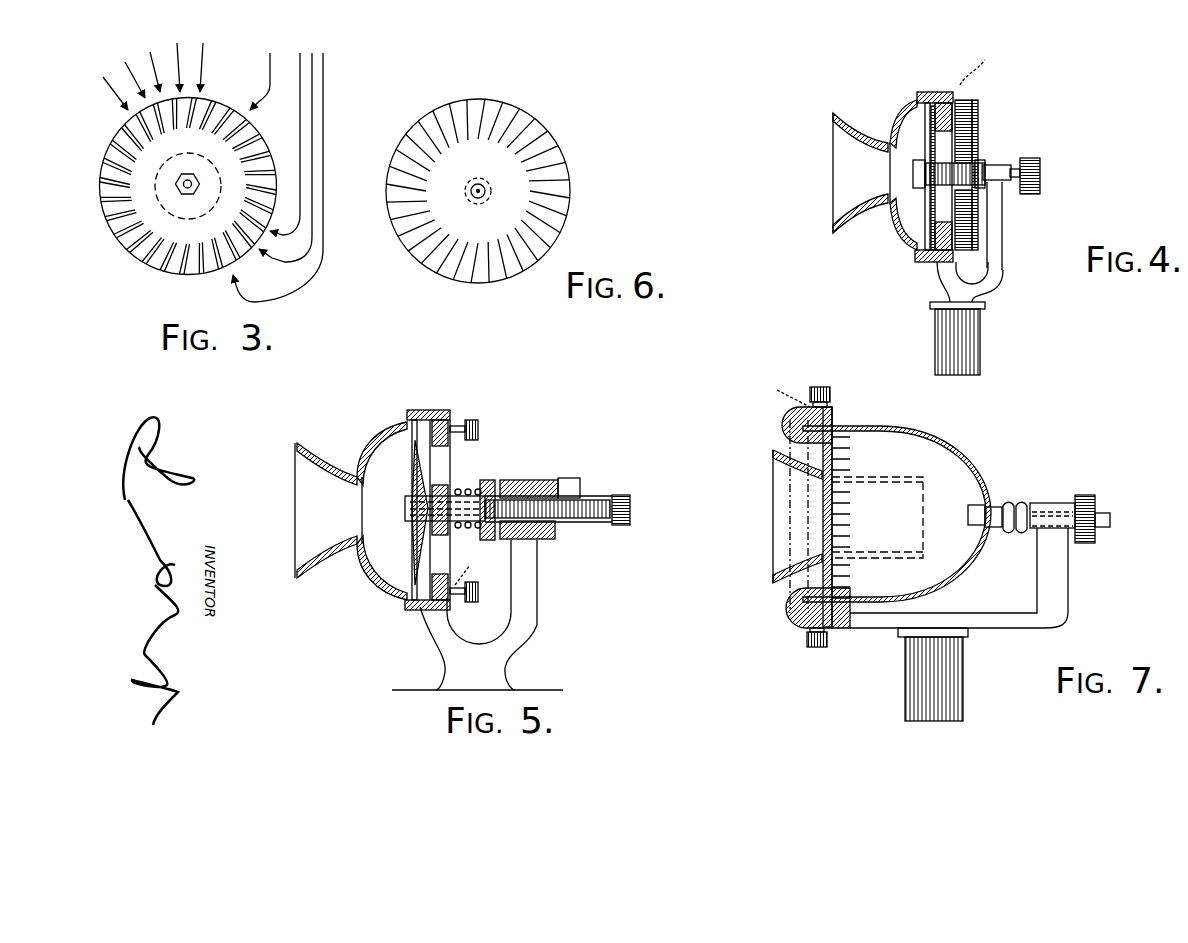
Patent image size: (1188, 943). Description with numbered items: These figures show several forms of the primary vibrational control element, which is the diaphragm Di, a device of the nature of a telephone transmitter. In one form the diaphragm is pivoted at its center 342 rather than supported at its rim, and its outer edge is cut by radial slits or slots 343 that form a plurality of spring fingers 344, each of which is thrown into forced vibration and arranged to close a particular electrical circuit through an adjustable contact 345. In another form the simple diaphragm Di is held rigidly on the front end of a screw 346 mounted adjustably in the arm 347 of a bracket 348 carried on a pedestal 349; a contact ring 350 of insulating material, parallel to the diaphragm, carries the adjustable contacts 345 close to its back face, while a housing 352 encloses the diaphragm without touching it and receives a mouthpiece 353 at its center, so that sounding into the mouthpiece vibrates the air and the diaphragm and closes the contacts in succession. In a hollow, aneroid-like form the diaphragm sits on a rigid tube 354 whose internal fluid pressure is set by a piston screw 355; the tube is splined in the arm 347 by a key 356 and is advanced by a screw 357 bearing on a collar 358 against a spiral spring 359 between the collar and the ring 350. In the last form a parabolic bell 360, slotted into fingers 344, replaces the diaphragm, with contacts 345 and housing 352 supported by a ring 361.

In FIG. 3, the center pivot 342 is at (188, 194).
In FIG. 3, the radial slits or slots 343 is at (255, 150).
In FIG. 3, the spring fingers 344 is at (234, 108).
In FIG. 6, the spring fingers 344 is at (543, 140).
In FIG. 5, the spring fingers 344 is at (409, 590).
In FIG. 3, the adjustable contacts 345 is at (133, 112).
In FIG. 4, the adjustable contacts 345 is at (936, 92).
In FIG. 5, the adjustable contacts 345 is at (473, 423).
In FIG. 7, the adjustable contacts 345 is at (812, 638).
In FIG. 3, the diaphragm Di is at (160, 237).
In FIG. 6, the diaphragm Di is at (530, 178).
In FIG. 4, the diaphragm Di is at (946, 130).
In FIG. 4, the screw 346 is at (969, 152).
In FIG. 4, the arm 347 is at (998, 214).
In FIG. 5, the arm 347 is at (538, 565).
In FIG. 7, the arm 347 is at (1069, 555).
In FIG. 4, the bracket 348 is at (985, 291).
In FIG. 4, the pedestal 349 is at (978, 322).
In FIG. 4, the contact ring 350 is at (966, 106).
In FIG. 5, the contact ring 350 is at (446, 424).
In FIG. 4, the housing 352 is at (883, 138).
In FIG. 5, the housing 352 is at (351, 511).
In FIG. 7, the housing 352 is at (798, 413).
In FIG. 4, the mouthpiece 353 is at (836, 163).
In FIG. 7, the mouthpiece 353 is at (774, 487).
In FIG. 5, the rigid tube 354 is at (449, 482).
In FIG. 7, the rigid tube 354 is at (846, 436).
In FIG. 5, the piston screw 355 is at (616, 494).
In FIG. 5, the key 356 is at (552, 522).
In FIG. 5, the screw 357 is at (556, 484).
In FIG. 5, the collar 358 is at (488, 531).
In FIG. 5, the spiral spring 359 is at (466, 490).
In FIG. 7, the parabolic bell 360 is at (952, 450).
In FIG. 7, the ring 361 is at (803, 621).